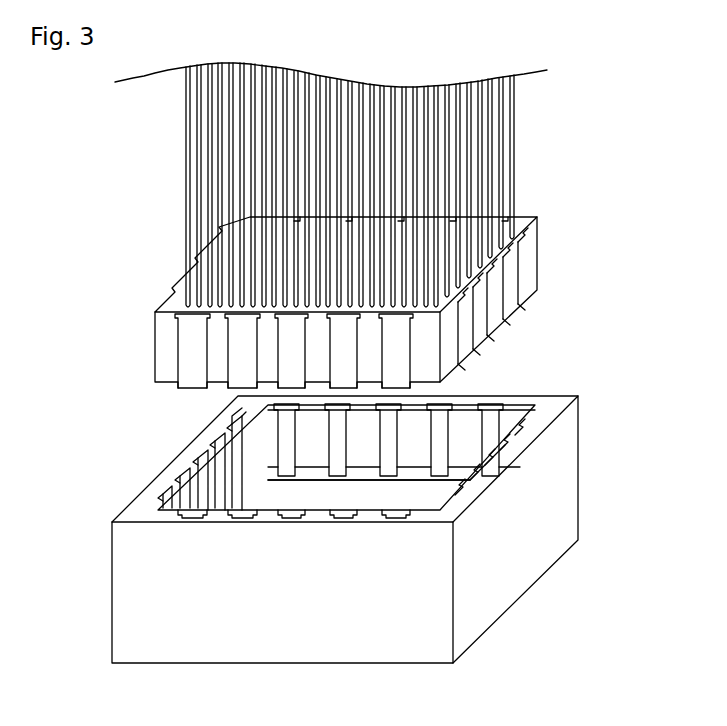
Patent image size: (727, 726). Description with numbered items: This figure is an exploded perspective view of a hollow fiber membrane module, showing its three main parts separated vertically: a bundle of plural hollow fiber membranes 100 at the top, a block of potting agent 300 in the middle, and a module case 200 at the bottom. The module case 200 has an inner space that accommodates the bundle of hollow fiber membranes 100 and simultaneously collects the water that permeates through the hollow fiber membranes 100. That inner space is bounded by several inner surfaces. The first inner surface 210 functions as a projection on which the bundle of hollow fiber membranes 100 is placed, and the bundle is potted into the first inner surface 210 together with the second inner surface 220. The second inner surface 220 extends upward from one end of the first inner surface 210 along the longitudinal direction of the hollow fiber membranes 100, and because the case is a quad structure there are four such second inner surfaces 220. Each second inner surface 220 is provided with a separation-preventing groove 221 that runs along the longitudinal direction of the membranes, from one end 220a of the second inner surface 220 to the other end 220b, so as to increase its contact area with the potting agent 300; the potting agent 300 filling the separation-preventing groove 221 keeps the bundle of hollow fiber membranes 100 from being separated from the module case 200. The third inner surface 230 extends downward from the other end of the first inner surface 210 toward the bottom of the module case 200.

The hollow fiber membranes 100 is at (517, 151).
The potting agent 300 is at (530, 256).
The module case 200 is at (578, 462).
The first inner surface 210 is at (237, 497).
The second inner surface 220 is at (190, 492).
The separation-preventing groove 221 is at (230, 427).
The third inner surface 230 is at (295, 495).
The one end of the second inner surface 220a is at (313, 477).
The other end of the second inner surface 220b is at (312, 410).